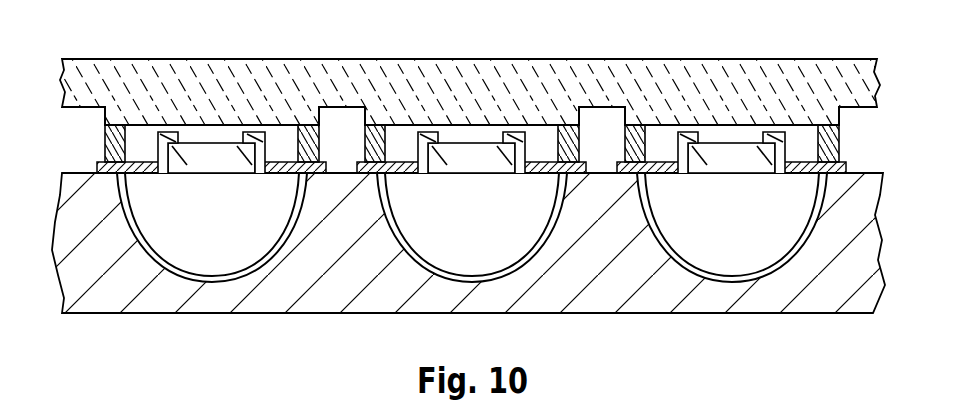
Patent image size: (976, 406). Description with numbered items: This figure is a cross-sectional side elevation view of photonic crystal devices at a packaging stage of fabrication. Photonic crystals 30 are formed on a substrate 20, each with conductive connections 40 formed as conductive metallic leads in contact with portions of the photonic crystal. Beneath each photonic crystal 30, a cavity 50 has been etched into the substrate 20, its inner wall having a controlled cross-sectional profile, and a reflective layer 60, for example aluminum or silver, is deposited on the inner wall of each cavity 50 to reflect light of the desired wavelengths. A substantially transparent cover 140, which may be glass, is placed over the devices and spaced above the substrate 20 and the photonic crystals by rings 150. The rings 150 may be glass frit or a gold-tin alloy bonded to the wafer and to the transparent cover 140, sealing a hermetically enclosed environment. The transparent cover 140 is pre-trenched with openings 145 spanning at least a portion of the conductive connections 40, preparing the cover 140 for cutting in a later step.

The substrate 20 is at (355, 265).
The photonic crystal 30 is at (227, 170).
The conductive connections 40 is at (141, 176).
The cavity 50 is at (228, 228).
The reflective layer 60 is at (238, 270).
The transparent cover 140 is at (488, 103).
The openings 145 is at (88, 125).
The rings 150 is at (116, 157).